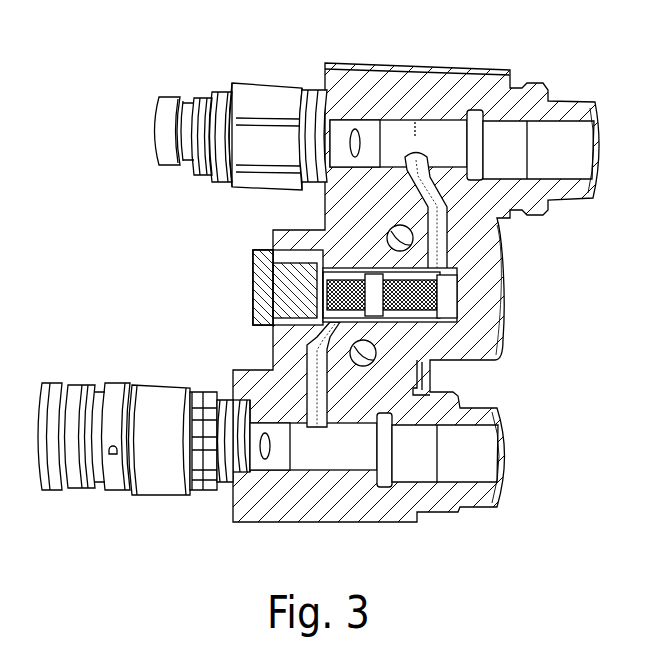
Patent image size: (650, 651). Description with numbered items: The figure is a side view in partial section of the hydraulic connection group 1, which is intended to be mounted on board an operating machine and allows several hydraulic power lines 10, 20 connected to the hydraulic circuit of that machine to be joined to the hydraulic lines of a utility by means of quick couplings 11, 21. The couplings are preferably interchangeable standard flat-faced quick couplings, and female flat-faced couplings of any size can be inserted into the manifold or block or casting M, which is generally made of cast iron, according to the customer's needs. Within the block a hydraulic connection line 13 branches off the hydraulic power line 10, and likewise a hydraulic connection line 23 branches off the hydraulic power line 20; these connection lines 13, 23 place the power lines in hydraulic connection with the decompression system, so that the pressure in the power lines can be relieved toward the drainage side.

The hydraulic connection group 1 is at (127, 81).
The hydraulic power line 10 is at (467, 68).
The quick coupling 11 is at (227, 96).
The hydraulic connection line 13 is at (440, 183).
The hydraulic power line 20 is at (317, 457).
The quick coupling 21 is at (107, 397).
The hydraulic connection line 23 is at (262, 345).
The manifold or block or casting M is at (403, 90).